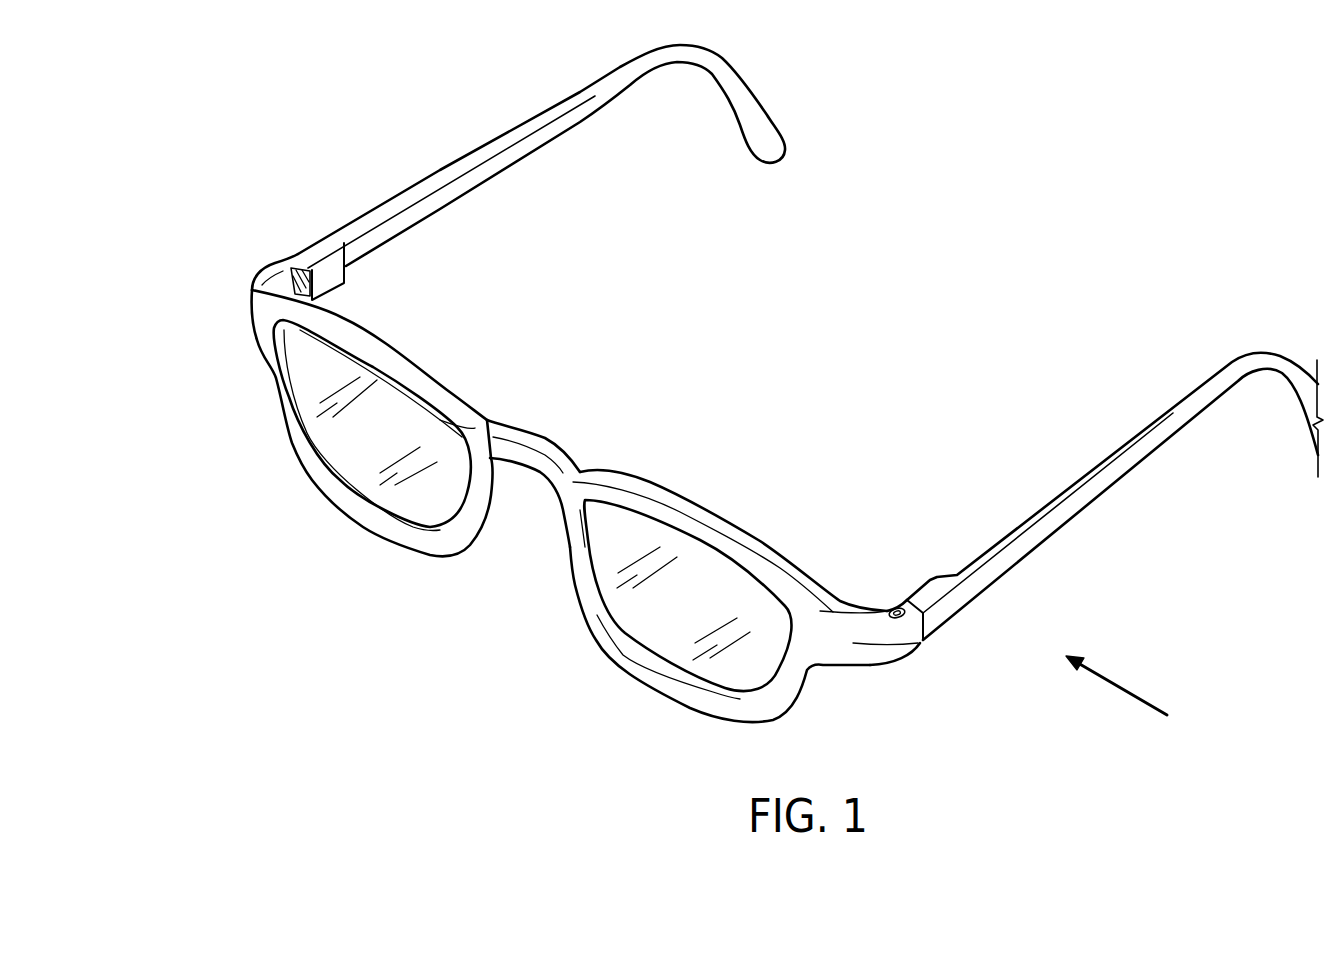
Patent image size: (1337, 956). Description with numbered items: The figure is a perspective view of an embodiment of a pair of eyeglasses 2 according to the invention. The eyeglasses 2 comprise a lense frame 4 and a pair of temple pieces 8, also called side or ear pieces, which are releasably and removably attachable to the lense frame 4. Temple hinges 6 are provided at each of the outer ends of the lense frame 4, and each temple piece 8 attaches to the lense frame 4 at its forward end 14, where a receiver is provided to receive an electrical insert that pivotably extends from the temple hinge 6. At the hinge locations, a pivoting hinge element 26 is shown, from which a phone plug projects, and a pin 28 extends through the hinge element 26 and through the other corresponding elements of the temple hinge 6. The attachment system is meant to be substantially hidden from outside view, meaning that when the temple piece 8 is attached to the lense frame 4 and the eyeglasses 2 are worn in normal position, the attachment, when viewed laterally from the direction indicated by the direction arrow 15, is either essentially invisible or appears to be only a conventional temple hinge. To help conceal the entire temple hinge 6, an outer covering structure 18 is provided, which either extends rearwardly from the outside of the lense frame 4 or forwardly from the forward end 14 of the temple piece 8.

The eyeglasses 2 is at (638, 281).
The lense frame 4 is at (481, 412).
The temple hinge 6 is at (291, 267).
The temple piece 8 is at (407, 192).
The forward end 14 is at (337, 281).
The direction arrow 15 is at (1123, 689).
The outer covering structure 18 is at (268, 284).
The pivoting hinge element 26 is at (307, 270).
The pin 28 is at (900, 610).